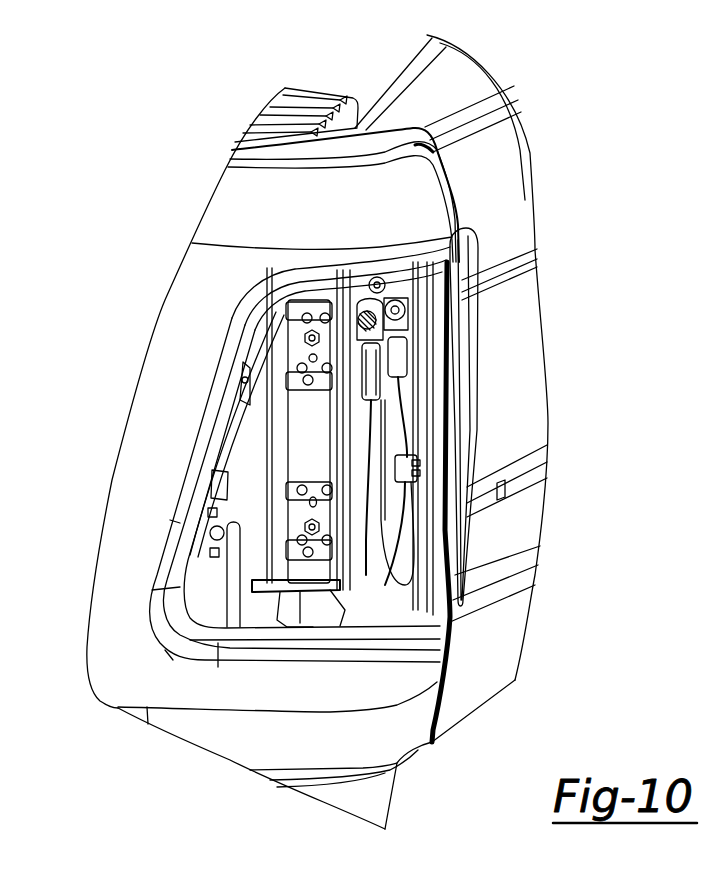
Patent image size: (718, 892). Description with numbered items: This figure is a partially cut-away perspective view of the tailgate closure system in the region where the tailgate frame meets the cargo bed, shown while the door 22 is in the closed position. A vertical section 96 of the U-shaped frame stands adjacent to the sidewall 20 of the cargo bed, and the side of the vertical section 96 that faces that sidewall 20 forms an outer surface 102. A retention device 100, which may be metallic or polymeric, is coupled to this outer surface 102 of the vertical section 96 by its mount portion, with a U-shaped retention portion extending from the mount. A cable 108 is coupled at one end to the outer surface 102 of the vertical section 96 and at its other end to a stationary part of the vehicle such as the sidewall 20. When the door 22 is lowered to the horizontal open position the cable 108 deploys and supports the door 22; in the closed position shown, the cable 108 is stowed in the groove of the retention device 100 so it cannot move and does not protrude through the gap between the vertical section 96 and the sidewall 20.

The sidewall 20 is at (412, 205).
The door 22 is at (512, 205).
The vertical section 96 is at (470, 290).
The retention device 100 is at (410, 467).
The outer surface 102 is at (390, 535).
The cable 108 is at (433, 593).